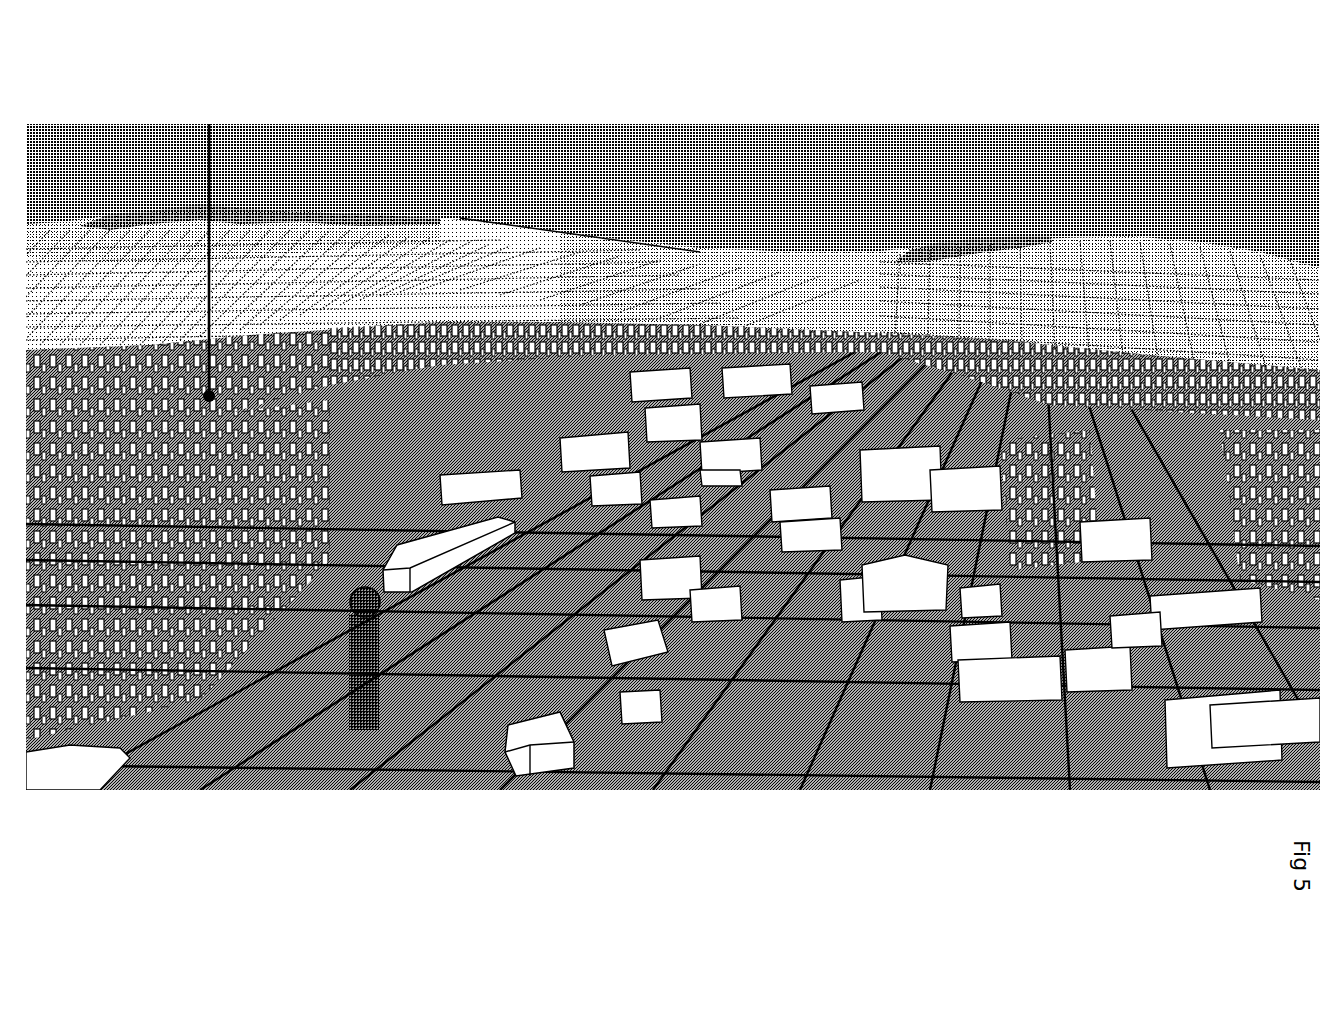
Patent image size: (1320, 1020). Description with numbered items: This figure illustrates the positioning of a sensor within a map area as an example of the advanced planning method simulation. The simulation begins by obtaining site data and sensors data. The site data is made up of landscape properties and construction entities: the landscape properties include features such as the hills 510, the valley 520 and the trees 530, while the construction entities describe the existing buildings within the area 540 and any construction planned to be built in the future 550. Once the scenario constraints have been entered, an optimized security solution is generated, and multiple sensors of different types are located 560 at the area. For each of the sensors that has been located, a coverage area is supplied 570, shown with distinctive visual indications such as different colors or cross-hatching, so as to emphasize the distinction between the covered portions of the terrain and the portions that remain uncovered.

The hills 510 is at (1130, 238).
The valley 520 is at (812, 297).
The trees 530 is at (946, 238).
The existing buildings within the area 540 is at (528, 763).
The construction planned to be built in the future 550 is at (430, 543).
The sensors located at the area 560 is at (332, 653).
The coverage area 570 is at (209, 124).